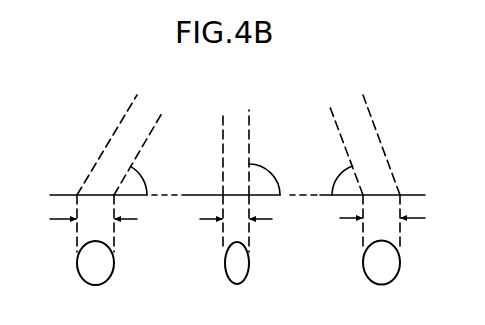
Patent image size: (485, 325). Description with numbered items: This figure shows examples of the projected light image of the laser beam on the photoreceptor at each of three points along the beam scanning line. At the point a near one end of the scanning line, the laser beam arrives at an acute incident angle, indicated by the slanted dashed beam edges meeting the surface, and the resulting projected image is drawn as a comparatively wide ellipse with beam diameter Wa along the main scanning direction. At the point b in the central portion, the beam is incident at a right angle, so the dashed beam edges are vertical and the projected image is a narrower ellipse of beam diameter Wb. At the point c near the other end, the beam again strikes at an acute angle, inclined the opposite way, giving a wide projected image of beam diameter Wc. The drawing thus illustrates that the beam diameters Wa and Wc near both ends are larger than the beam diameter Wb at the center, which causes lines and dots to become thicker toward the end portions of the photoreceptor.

The point a is at (119, 204).
The point b is at (236, 211).
The point c is at (365, 204).
The beam diameter Wa is at (93, 219).
The beam diameter Wb is at (242, 218).
The beam diameter Wc is at (382, 218).